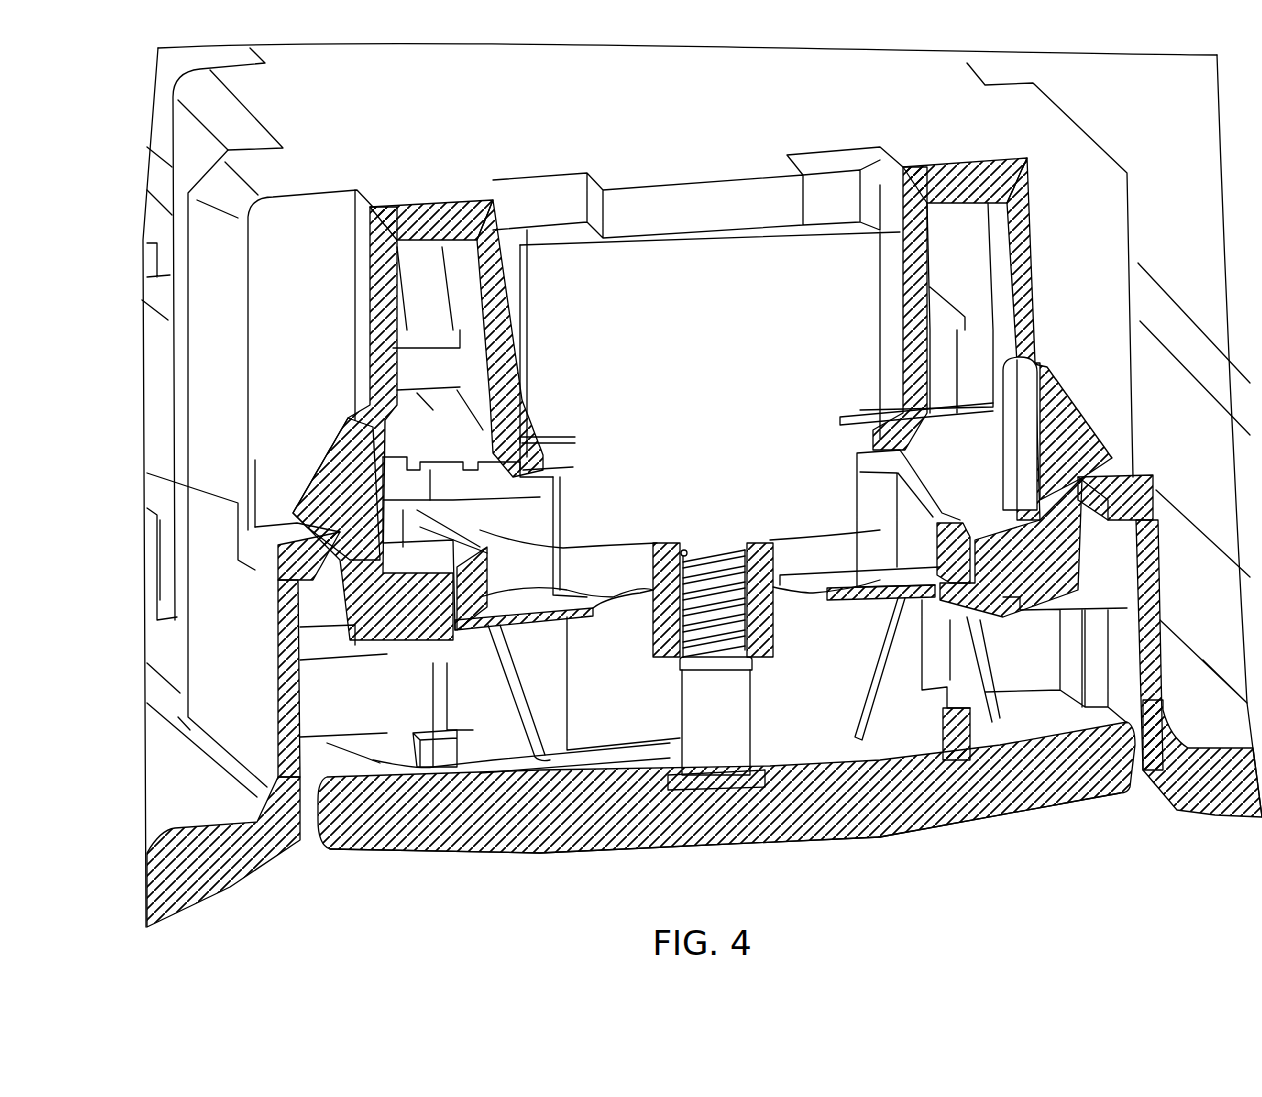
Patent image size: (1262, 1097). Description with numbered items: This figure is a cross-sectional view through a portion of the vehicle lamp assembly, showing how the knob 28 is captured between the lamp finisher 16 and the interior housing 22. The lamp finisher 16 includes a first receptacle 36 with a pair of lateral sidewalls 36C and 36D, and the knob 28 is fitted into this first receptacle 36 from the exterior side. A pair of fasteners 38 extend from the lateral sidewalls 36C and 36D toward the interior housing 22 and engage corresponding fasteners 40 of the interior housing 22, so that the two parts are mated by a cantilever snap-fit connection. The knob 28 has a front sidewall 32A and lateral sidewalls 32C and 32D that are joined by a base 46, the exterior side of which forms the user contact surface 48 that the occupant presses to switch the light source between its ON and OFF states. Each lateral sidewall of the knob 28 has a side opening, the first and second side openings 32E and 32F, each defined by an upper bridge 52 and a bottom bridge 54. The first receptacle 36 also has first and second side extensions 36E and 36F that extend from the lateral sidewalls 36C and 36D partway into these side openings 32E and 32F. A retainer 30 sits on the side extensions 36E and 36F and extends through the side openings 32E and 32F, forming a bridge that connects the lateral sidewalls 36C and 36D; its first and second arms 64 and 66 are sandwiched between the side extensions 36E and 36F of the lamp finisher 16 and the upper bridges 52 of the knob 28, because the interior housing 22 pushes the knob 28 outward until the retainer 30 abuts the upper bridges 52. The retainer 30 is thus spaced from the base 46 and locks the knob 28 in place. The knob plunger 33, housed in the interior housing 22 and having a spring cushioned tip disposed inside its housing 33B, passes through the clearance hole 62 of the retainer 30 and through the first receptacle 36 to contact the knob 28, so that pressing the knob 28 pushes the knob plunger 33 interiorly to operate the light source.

The lamp finisher 16 is at (267, 645).
The interior housing 22 is at (1020, 197).
The knob 28 is at (405, 852).
The retainer 30 is at (543, 632).
The front sidewall 32A is at (680, 757).
The lateral sidewall 32C is at (440, 543).
The lateral sidewall 32D is at (923, 497).
The first side opening 32E is at (487, 713).
The second side opening 32F is at (927, 668).
The knob plunger 33 is at (757, 721).
The housing of the knob plunger 33B is at (777, 600).
The first receptacle 36 is at (287, 698).
The lateral sidewall 36C is at (388, 650).
The lateral sidewall 36D is at (1060, 550).
The first side extension 36E is at (470, 650).
The second side extension 36F is at (995, 620).
The fastener 38 is at (355, 472).
The corresponding fastener 40 is at (297, 560).
The base 46 is at (592, 820).
The user contact surface 48 is at (893, 835).
The upper bridge 52 is at (473, 570).
The bottom bridge 54 is at (500, 760).
The clearance hole 62 is at (620, 595).
The first arm 64 is at (511, 693).
The second arm 66 is at (900, 600).